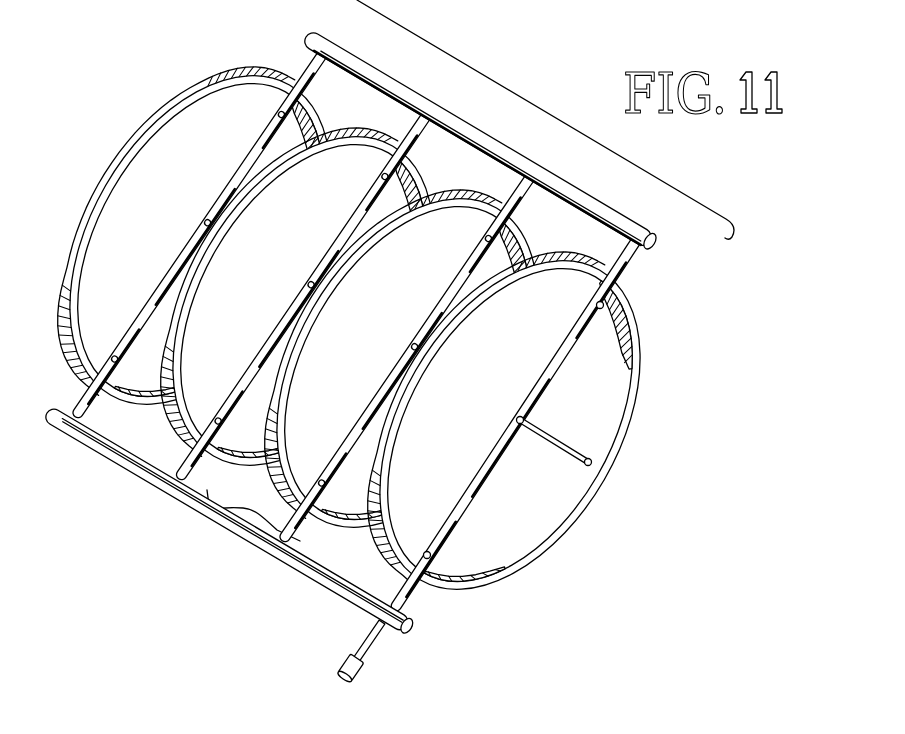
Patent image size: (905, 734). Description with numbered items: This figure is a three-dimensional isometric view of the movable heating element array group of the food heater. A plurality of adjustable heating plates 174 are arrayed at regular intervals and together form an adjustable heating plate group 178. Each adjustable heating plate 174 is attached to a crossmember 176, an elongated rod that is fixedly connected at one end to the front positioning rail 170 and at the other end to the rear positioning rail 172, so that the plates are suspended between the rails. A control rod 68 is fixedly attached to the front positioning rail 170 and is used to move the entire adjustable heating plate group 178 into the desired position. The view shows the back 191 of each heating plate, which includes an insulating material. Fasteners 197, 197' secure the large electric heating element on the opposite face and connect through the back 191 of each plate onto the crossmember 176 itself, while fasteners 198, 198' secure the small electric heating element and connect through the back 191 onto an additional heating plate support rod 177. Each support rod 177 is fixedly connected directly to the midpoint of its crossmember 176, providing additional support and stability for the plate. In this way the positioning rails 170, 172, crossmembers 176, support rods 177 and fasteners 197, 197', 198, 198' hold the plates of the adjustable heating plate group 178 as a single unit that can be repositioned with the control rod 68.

The control rod 68 is at (365, 672).
The front positioning rail 170 is at (341, 583).
The rear positioning rail 172 is at (574, 184).
The adjustable heating plate 174 is at (187, 92).
The crossmember 176 is at (408, 127).
The heating plate support rod 177 is at (549, 440).
The adjustable heating plate group 178 is at (516, 99).
The back side of heating plate 191 is at (511, 527).
The fastener 197 is at (454, 590).
The fastener 197' is at (645, 299).
The fastener 198 is at (628, 459).
The fastener 198' is at (602, 405).